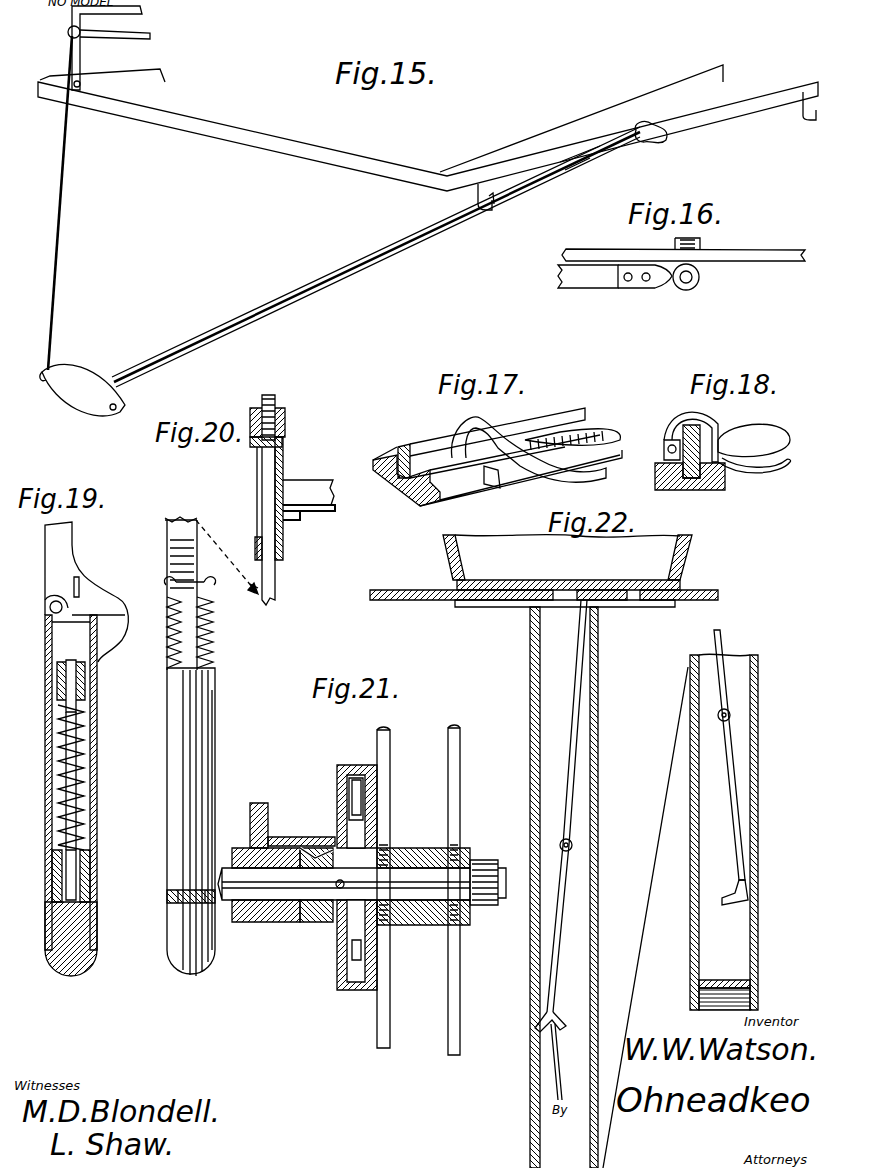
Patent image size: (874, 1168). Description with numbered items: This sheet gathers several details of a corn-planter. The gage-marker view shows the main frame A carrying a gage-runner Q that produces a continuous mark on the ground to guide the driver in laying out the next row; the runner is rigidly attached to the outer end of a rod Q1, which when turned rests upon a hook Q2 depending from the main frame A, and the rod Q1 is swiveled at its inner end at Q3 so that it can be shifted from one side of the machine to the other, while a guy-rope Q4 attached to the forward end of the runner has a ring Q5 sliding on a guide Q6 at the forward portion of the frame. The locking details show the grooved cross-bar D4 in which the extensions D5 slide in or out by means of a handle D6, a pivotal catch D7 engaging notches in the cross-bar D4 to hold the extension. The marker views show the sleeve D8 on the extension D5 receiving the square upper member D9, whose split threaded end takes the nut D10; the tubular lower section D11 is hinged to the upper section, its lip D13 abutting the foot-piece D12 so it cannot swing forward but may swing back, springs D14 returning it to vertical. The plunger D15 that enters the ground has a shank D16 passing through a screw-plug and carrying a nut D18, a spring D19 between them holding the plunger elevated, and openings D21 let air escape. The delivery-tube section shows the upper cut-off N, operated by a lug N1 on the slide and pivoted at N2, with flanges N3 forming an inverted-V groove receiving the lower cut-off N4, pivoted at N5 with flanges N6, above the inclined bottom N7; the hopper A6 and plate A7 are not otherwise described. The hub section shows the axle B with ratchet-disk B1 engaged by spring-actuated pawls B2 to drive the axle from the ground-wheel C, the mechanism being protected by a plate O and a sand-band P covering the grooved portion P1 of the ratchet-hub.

In FIG. 15, the main frame A is at (232, 126).
In FIG. 16, the main frame A is at (758, 262).
In FIG. 21, the main frame A is at (259, 802).
In FIG. 15, the gage-runner Q is at (84, 376).
In FIG. 15, the rod Q1 is at (340, 282).
In FIG. 16, the rod Q1 is at (592, 280).
In FIG. 15, the hook Q2 is at (474, 196).
In FIG. 15, the swivel Q3 is at (658, 146).
In FIG. 16, the swivel Q3 is at (684, 288).
In FIG. 15, the guy-rope Q4 is at (62, 192).
In FIG. 15, the ring Q5 is at (68, 34).
In FIG. 15, the guide Q6 is at (118, 10).
In FIG. 17, the cross-bar D4 is at (402, 500).
In FIG. 18, the cross-bar D4 is at (688, 490).
In FIG. 17, the extension D5 is at (418, 444).
In FIG. 18, the extension D5 is at (680, 438).
In FIG. 20, the extension D5 is at (310, 490).
In FIG. 17, the handle D6 is at (570, 445).
In FIG. 18, the handle D6 is at (765, 426).
In FIG. 17, the pivotal catch D7 is at (538, 476).
In FIG. 18, the pivotal catch D7 is at (766, 470).
In FIG. 20, the sleeve D8 is at (256, 462).
In FIG. 20, the upper member of marker D9 is at (283, 578).
In FIG. 20, the nut D10 is at (285, 428).
In FIG. 19, the lower section of marker D11 is at (98, 725).
In FIG. 19, the foot-piece D12 is at (102, 600).
In FIG. 19, the lip D13 is at (100, 670).
In FIG. 19, the spring D14 is at (165, 665).
In FIG. 19, the plunger D15 is at (86, 935).
In FIG. 19, the shank D16 is at (85, 786).
In FIG. 19, the nut D18 is at (60, 686).
In FIG. 19, the spring D19 is at (66, 758).
In FIG. 19, the openings D21 is at (92, 855).
In FIG. 22, the hopper A6 is at (567, 562).
In FIG. 22, the plate and tube A7 is at (690, 690).
In FIG. 22, the upper cut-off N is at (578, 760).
In FIG. 22, the lug N1 is at (572, 608).
In FIG. 22, the pivot N2 is at (572, 845).
In FIG. 22, the flanges N3 is at (538, 1022).
In FIG. 22, the lower cut-off N4 is at (556, 1063).
In FIG. 22, the pivot N5 is at (730, 715).
In FIG. 22, the flanges N6 is at (745, 895).
In FIG. 22, the inclined bottom N7 is at (740, 982).
In FIG. 21, the axle B is at (400, 870).
In FIG. 21, the ratchet-disk B1 is at (346, 938).
In FIG. 21, the spring-actuated pawl B2 is at (378, 796).
In FIG. 21, the ground-wheel C is at (418, 890).
In FIG. 21, the plate O is at (346, 790).
In FIG. 21, the sand-band P is at (296, 836).
In FIG. 21, the grooved portion P1 is at (316, 918).